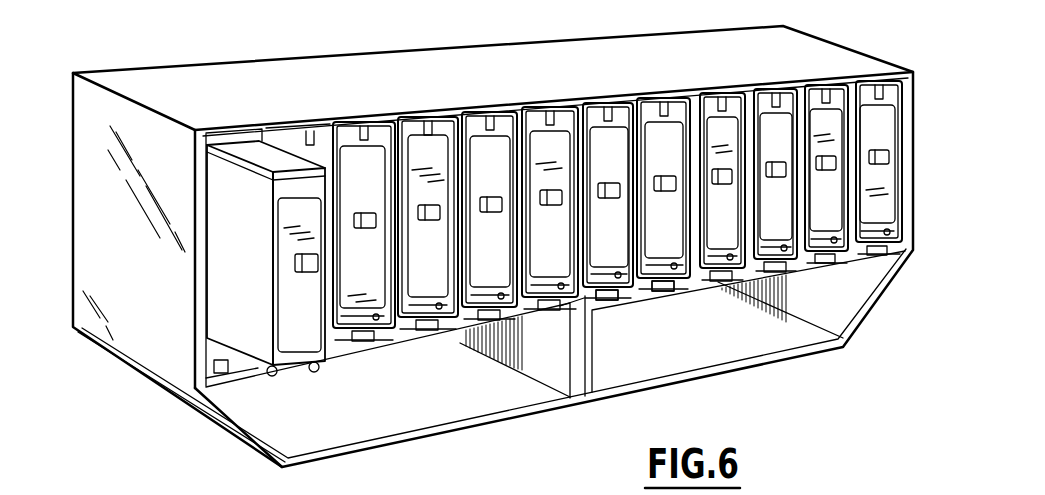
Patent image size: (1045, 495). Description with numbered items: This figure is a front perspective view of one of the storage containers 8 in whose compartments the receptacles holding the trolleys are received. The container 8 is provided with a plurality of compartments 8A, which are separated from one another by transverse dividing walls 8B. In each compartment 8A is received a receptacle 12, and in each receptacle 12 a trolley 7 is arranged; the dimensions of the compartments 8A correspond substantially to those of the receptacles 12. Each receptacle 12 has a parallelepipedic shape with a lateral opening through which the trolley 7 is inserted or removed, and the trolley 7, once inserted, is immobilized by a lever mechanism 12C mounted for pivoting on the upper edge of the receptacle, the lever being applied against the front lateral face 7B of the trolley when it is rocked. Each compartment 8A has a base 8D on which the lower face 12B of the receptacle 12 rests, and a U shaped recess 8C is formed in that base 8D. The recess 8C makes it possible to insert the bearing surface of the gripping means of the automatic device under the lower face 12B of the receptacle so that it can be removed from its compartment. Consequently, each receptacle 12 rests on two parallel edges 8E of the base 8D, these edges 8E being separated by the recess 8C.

The trolley 7 is at (607, 152).
The front lateral face 7B is at (356, 166).
The container 8 is at (362, 50).
The compartment 8A is at (613, 254).
The transverse dividing wall 8B is at (467, 108).
The U shaped recess 8C is at (778, 269).
The base 8D is at (819, 270).
The parallel edges 8E is at (665, 242).
The receptacle 12 is at (592, 103).
The lower face 12B is at (484, 313).
The lever mechanism 12C is at (770, 100).